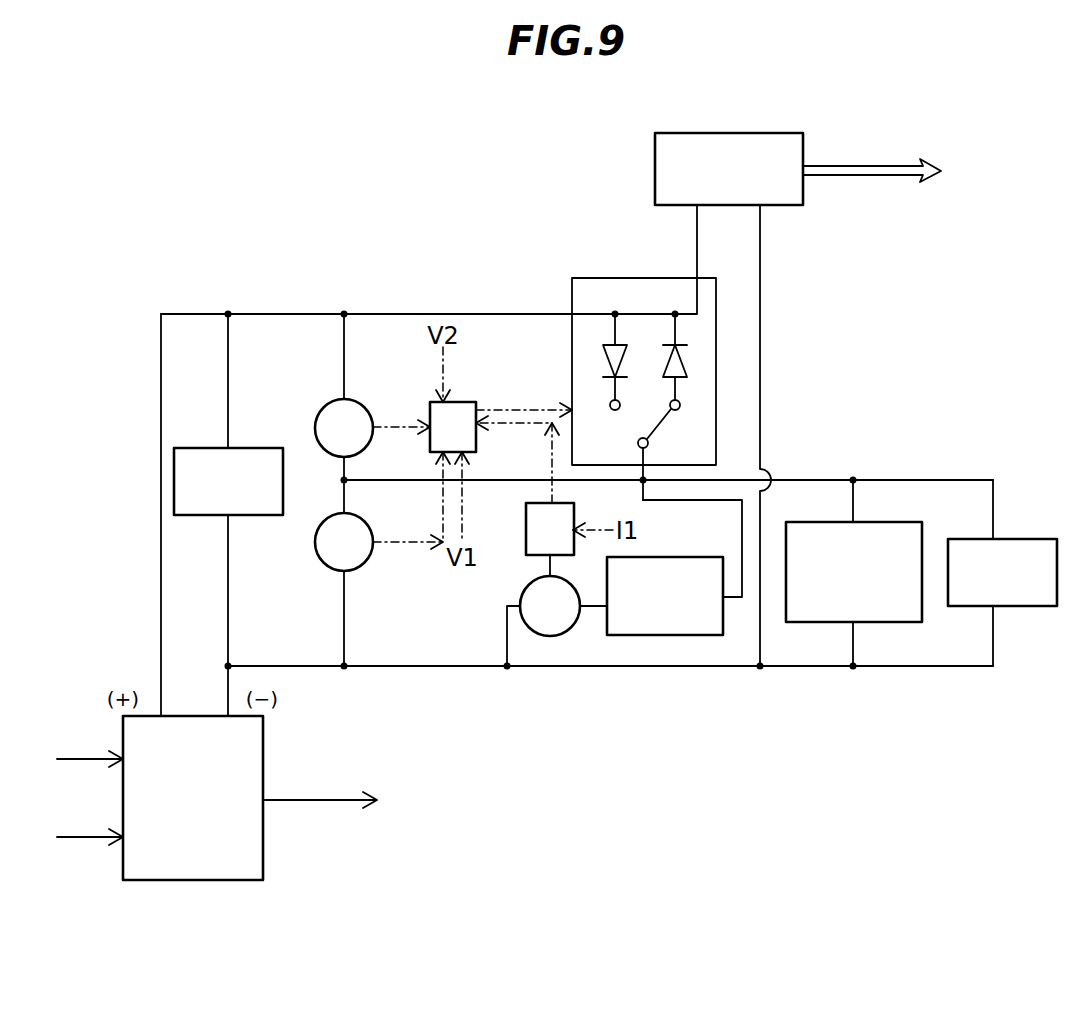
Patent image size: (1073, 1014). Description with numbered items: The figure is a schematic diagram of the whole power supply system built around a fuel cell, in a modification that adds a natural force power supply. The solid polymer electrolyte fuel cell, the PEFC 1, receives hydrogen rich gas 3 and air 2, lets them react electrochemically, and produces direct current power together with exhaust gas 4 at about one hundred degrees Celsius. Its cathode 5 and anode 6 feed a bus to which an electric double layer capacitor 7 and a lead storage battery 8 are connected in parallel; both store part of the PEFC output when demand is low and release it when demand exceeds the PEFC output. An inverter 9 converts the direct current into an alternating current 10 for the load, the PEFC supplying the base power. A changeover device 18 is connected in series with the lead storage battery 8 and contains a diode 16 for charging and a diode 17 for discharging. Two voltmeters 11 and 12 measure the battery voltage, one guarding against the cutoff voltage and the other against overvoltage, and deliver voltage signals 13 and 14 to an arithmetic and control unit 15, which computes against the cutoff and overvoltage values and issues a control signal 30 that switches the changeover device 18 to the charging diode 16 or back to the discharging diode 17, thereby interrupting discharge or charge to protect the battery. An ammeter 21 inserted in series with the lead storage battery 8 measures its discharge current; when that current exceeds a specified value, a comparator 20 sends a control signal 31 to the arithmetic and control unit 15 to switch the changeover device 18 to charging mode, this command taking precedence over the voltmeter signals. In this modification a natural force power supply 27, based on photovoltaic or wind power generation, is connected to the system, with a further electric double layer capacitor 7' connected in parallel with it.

The solid polymer electrolyte fuel cell (PEFC) 1 is at (263, 852).
The air 2 is at (92, 836).
The hydrogen rich gas 3 is at (92, 758).
The exhaust gas 4 is at (300, 800).
The cathode 5 is at (160, 452).
The anode 6 is at (430, 667).
The electric double layer capacitor 7 is at (228, 463).
The electric double layer capacitor 7' is at (1003, 558).
The lead storage battery 8 is at (723, 612).
The inverter 9 is at (713, 133).
The alternating current 10 is at (858, 166).
The voltmeter 11 is at (333, 568).
The voltmeter 12 is at (333, 401).
The voltage signal 13 is at (383, 427).
The voltage signal 14 is at (407, 544).
The arithmetic and control unit 15 is at (466, 402).
The diode 16 is at (600, 367).
The diode 17 is at (688, 378).
The changeover device 18 is at (604, 278).
The comparator 20 is at (565, 503).
The ammeter 21 is at (573, 625).
The natural force power supply 27 is at (893, 522).
The control signal 30 is at (528, 410).
The control signal 31 is at (517, 459).